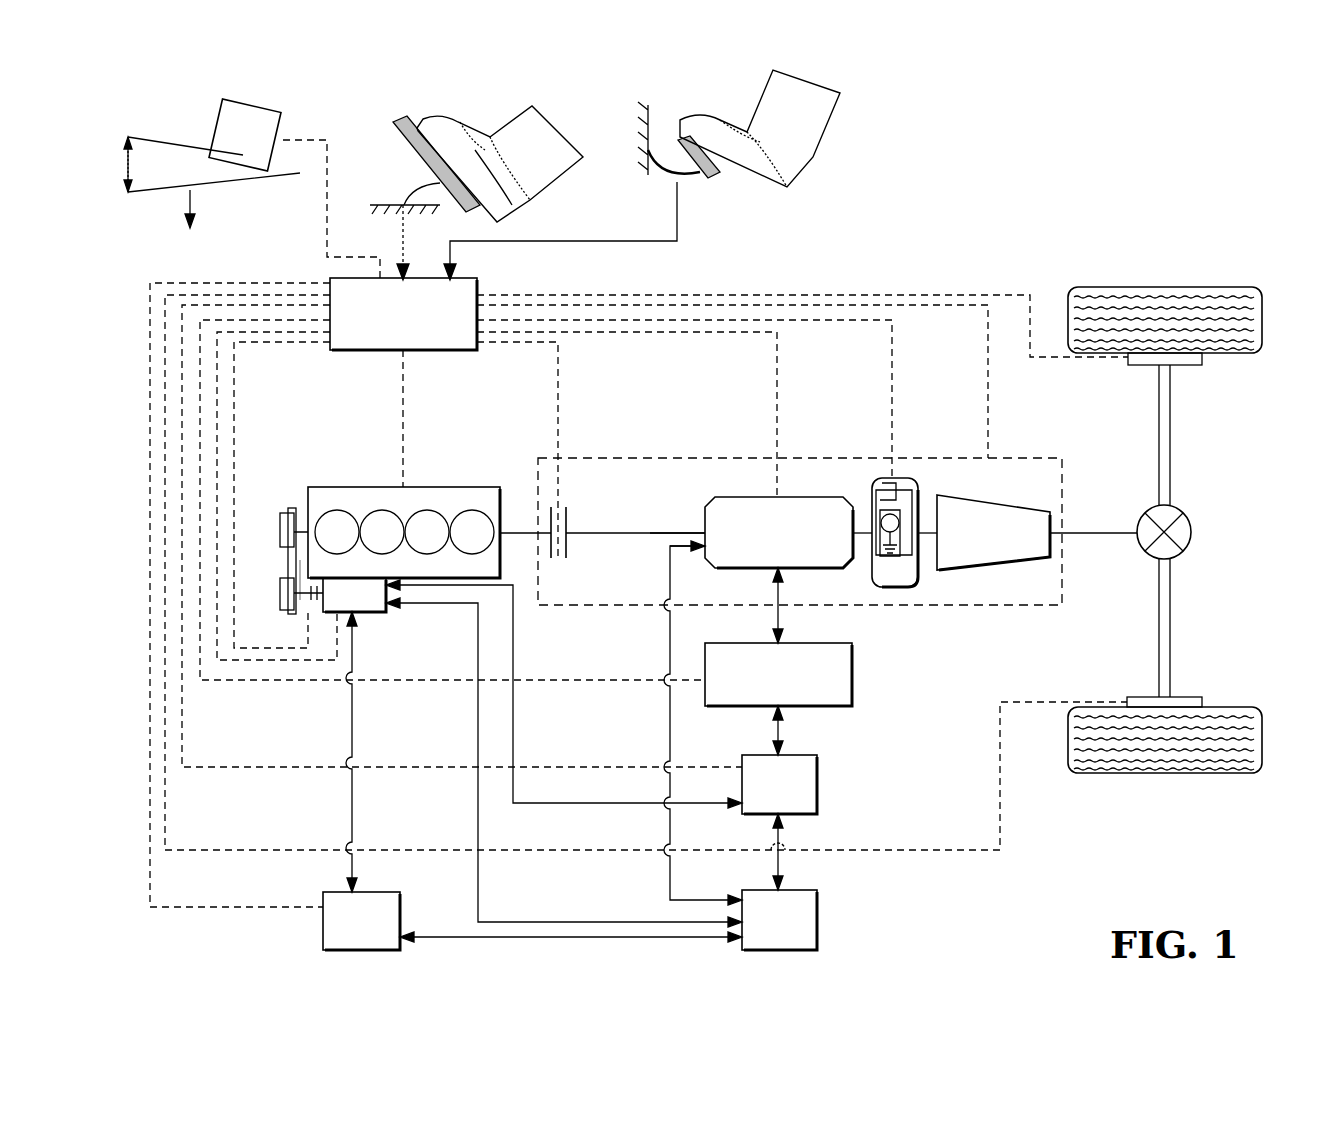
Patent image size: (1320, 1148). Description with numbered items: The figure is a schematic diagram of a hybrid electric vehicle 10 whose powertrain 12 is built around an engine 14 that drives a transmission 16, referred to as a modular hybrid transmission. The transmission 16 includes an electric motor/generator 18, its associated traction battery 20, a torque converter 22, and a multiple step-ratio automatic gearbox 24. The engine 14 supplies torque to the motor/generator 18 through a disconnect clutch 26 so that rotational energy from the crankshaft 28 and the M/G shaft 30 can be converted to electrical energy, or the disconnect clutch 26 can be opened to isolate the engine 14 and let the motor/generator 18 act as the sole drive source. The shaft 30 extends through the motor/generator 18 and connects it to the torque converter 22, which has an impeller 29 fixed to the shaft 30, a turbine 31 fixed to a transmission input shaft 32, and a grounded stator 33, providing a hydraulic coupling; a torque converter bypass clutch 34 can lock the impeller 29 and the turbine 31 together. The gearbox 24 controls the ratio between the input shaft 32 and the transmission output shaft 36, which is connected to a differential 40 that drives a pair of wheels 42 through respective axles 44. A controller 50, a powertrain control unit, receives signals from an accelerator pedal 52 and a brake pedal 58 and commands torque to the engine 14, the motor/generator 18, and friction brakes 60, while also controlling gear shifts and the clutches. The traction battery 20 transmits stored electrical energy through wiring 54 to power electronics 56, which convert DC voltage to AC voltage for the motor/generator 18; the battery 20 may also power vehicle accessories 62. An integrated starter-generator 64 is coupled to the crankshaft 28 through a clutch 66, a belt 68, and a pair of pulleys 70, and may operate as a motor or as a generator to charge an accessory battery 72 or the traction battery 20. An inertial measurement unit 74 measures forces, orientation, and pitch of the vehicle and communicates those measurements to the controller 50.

The hybrid electric vehicle 10 is at (972, 80).
The powertrain 12 is at (458, 705).
The engine 14 is at (355, 487).
The transmission 16 is at (855, 458).
The electric motor/generator 18 is at (740, 497).
The traction battery 20 is at (817, 785).
The torque converter 22 is at (890, 587).
The gearbox 24 is at (995, 572).
The disconnect clutch 26 is at (566, 520).
The crankshaft 28 is at (304, 520).
The impeller 29 is at (925, 515).
The M/G shaft 30 is at (650, 533).
The turbine 31 is at (878, 510).
The transmission input shaft 32 is at (968, 508).
The stator 33 is at (886, 542).
The torque converter bypass clutch 34 is at (895, 483).
The transmission output shaft 36 is at (1090, 533).
The differential 40 is at (1192, 533).
The wheels 42 is at (1165, 287).
The axles 44 is at (1172, 430).
The controller 50 is at (345, 278).
The accelerator pedal 52 is at (395, 150).
The wiring 54 is at (775, 730).
The power electronics 56 is at (852, 680).
The brake pedal 58 is at (722, 185).
The friction brakes 60 is at (1202, 359).
The vehicle accessories 62 is at (817, 918).
The integrated starter-generator 64 is at (376, 612).
The clutch 66 is at (300, 615).
The belt 68 is at (288, 560).
The pulleys 70 is at (282, 522).
The accessory battery 72 is at (400, 912).
The inertial measurement unit 74 is at (264, 100).